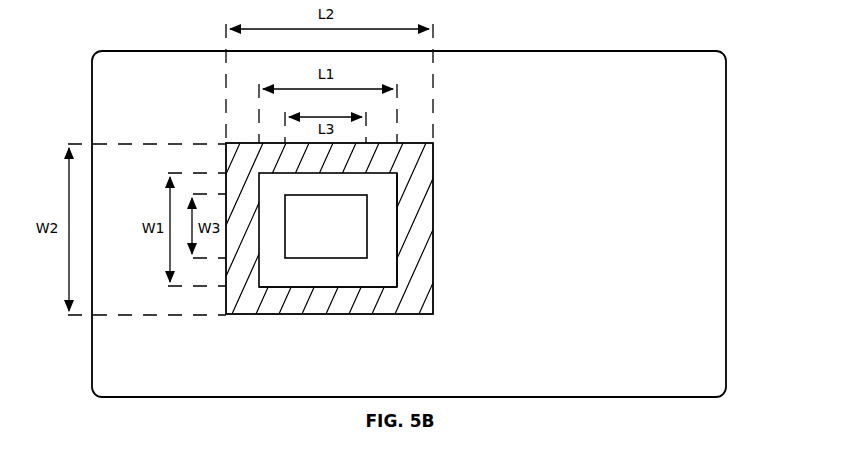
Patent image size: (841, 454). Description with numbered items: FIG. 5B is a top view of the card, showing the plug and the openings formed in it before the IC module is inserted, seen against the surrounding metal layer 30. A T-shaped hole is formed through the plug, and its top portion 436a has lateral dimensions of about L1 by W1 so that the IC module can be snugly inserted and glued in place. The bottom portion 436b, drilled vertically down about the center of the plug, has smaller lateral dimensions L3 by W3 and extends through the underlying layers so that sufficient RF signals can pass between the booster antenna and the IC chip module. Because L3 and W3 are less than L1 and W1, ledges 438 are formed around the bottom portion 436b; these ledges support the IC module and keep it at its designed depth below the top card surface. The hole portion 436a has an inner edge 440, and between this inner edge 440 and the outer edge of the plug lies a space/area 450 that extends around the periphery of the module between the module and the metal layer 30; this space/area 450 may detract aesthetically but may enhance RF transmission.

The metal layer 30 is at (92, 98).
The top portion of T-shaped hole 436a is at (383, 188).
The bottom portion of hole 436b is at (326, 226).
The ledges 438 is at (302, 277).
The inner edge 440 is at (398, 265).
The space/area 450 is at (407, 224).